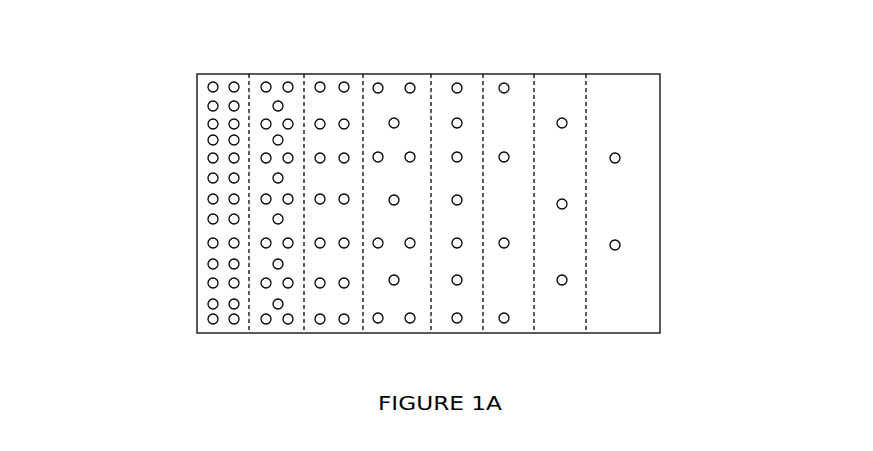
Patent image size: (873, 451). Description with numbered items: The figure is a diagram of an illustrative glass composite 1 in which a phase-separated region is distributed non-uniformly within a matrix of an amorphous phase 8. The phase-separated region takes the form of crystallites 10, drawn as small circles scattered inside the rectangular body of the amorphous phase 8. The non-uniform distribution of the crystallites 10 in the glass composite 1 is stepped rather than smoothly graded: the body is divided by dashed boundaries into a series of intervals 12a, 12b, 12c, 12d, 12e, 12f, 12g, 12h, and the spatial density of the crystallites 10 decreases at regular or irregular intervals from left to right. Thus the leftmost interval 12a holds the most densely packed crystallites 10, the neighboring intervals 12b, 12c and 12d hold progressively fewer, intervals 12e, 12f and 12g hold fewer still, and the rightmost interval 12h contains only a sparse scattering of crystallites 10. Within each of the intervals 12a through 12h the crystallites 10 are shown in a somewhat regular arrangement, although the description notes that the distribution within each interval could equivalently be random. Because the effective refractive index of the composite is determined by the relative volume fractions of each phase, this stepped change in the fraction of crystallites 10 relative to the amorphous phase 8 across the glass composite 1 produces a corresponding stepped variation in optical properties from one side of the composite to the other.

The glass composite 1 is at (96, 123).
The amorphous phase 8 is at (650, 288).
The crystallites 10 is at (210, 283).
The interval 12a is at (230, 61).
The interval 12b is at (280, 61).
The interval 12c is at (342, 61).
The interval 12d is at (402, 61).
The interval 12e is at (464, 61).
The interval 12f is at (513, 61).
The interval 12g is at (567, 61).
The interval 12h is at (625, 61).